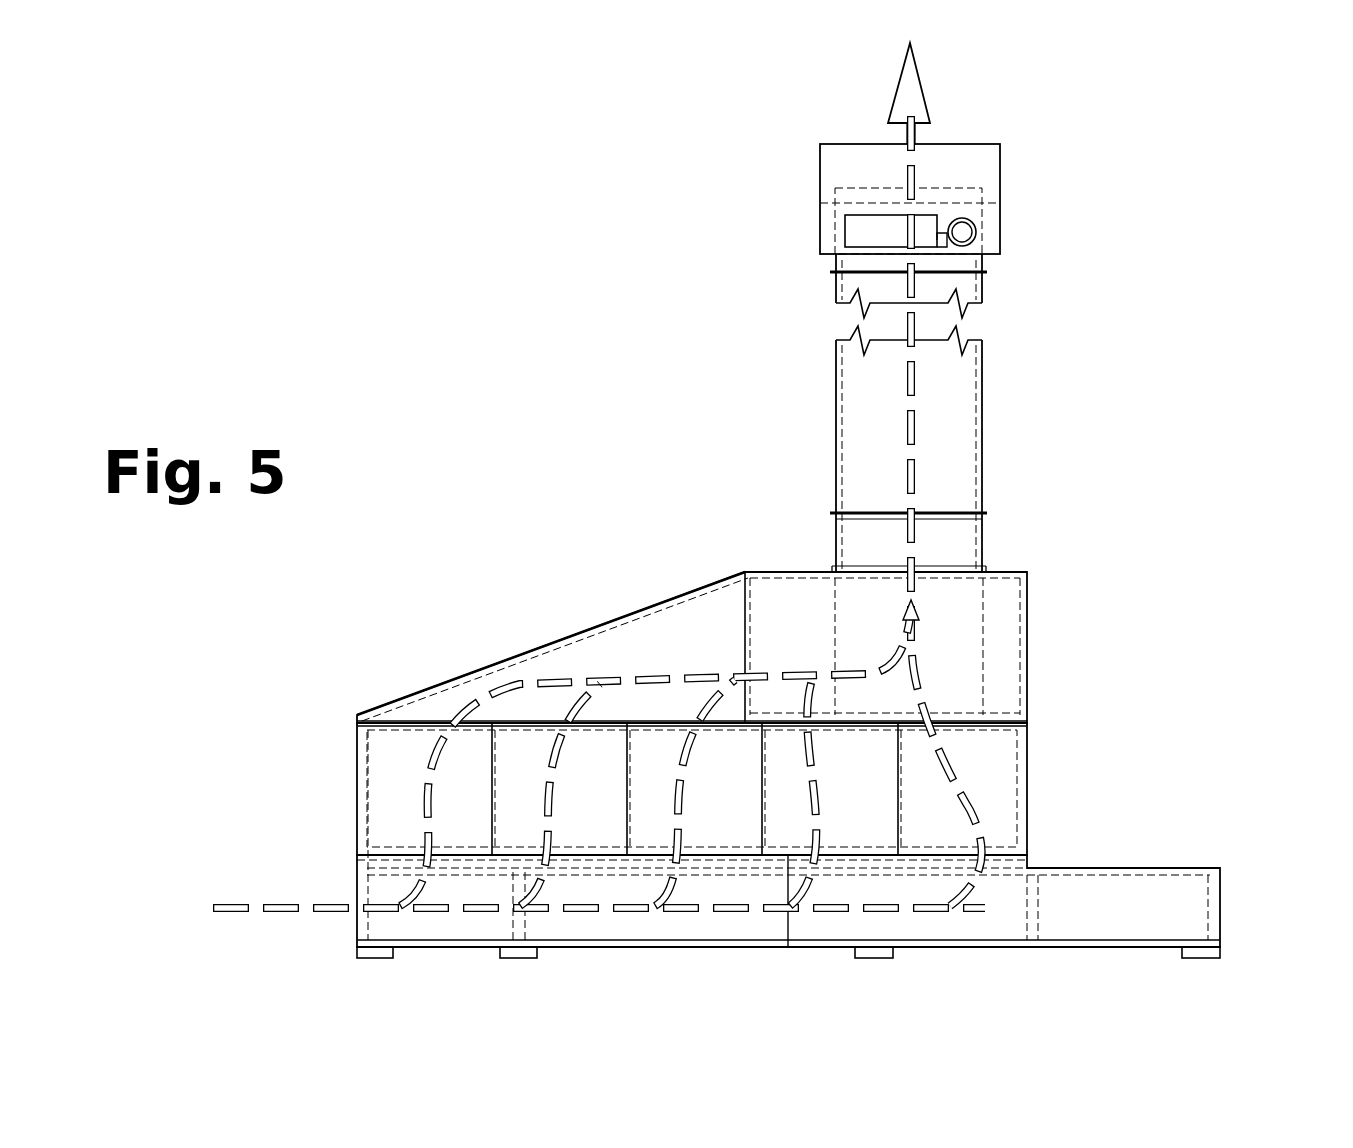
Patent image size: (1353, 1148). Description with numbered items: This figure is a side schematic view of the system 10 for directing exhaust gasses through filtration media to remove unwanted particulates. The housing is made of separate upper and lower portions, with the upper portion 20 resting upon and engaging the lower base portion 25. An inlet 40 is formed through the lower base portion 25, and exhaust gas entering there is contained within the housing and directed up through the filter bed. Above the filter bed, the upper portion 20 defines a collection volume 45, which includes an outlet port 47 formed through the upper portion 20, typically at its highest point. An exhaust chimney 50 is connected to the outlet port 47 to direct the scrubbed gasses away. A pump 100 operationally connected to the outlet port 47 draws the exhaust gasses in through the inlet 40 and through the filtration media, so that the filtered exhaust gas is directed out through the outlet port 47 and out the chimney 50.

The system 10 is at (1252, 653).
The upper portion 20 is at (312, 788).
The lower base portion 25 is at (318, 938).
The inlet 40 is at (364, 886).
The collection volume 45 is at (1045, 585).
The outlet port 47 is at (944, 143).
The exhaust chimney 50 is at (950, 440).
The pump 100 is at (943, 220).